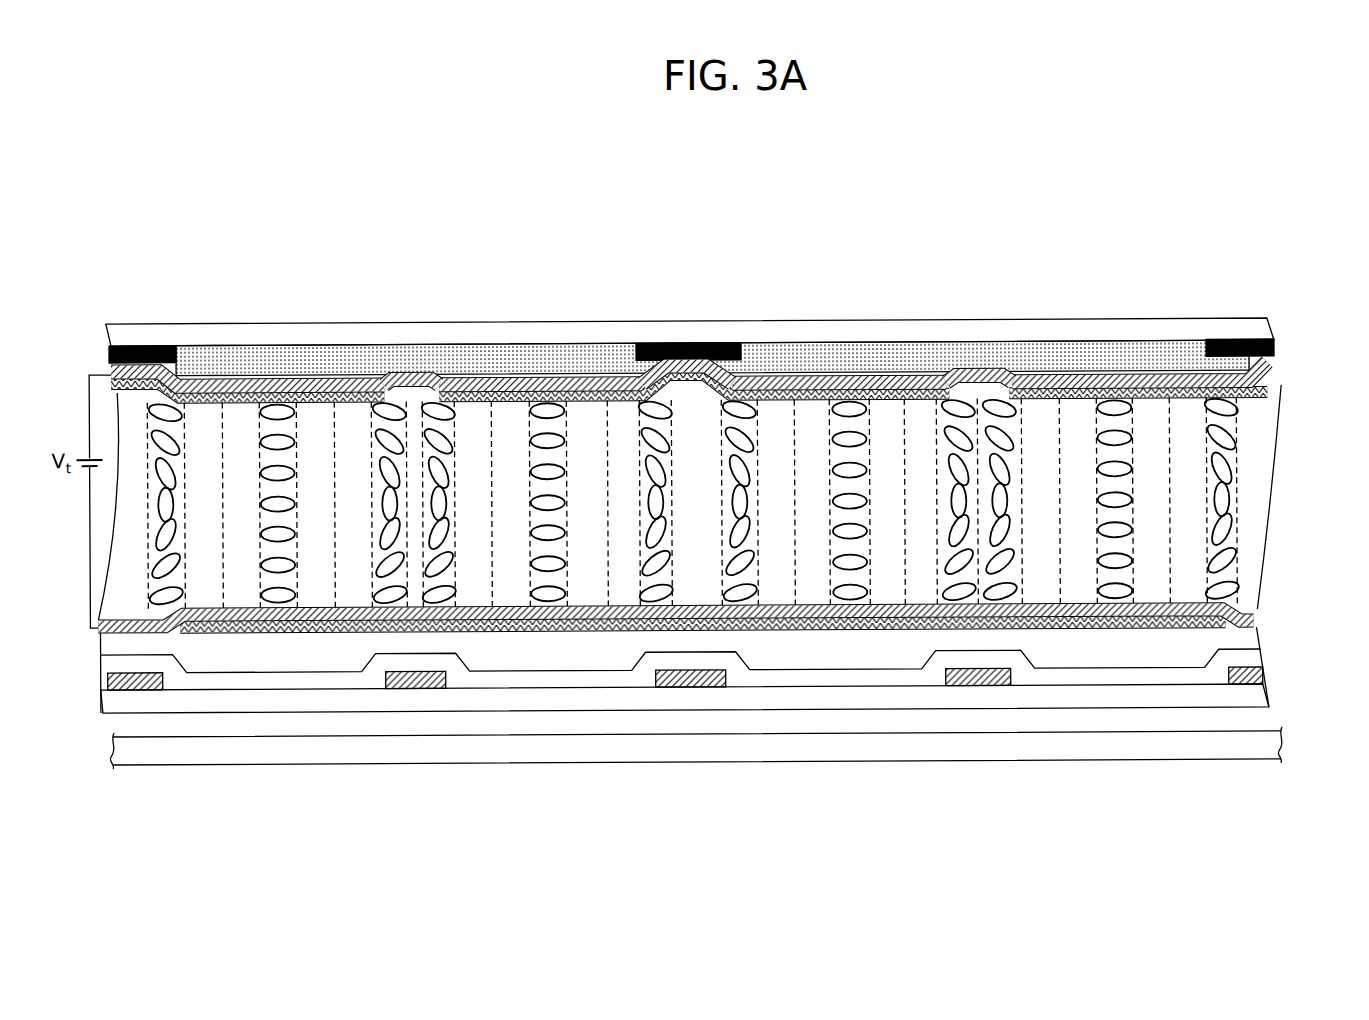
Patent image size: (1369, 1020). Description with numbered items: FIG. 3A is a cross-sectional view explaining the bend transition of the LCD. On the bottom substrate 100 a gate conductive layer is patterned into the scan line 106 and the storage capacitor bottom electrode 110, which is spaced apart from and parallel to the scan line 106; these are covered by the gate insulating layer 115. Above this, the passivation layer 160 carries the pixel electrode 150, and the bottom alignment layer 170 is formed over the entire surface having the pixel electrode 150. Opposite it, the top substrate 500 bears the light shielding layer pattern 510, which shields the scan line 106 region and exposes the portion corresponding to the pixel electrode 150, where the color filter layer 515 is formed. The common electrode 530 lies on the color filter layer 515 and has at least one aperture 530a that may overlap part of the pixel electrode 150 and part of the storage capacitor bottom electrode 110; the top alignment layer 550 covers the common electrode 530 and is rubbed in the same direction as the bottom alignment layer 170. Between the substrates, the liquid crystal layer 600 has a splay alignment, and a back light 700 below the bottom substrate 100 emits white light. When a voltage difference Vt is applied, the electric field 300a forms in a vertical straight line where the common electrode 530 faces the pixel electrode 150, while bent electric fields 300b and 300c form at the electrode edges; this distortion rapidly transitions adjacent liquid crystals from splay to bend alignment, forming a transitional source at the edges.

The bottom substrate 100 is at (1247, 695).
The scan line 106 is at (132, 690).
The storage capacitor bottom electrode 110 is at (412, 690).
The gate insulating layer 115 is at (1247, 661).
The pixel electrode 150 is at (1237, 615).
The passivation layer 160 is at (1247, 639).
The bottom alignment layer 170 is at (1245, 604).
The electric field 300a is at (613, 432).
The bent electric field 300b is at (677, 427).
The bent electric field 300c is at (428, 420).
The top substrate 500 is at (1262, 325).
The light shielding layer pattern 510 is at (1277, 345).
The color filter layer 515 is at (334, 362).
The common electrode 530 is at (1272, 362).
The aperture 530a is at (990, 383).
The top alignment layer 550 is at (1265, 386).
The liquid crystal layer 600 is at (1285, 398).
The back light 700 is at (1263, 746).